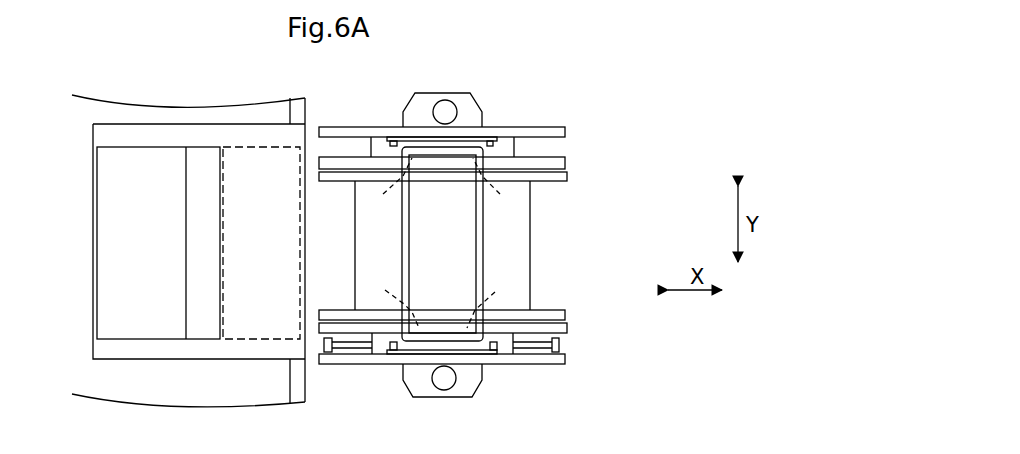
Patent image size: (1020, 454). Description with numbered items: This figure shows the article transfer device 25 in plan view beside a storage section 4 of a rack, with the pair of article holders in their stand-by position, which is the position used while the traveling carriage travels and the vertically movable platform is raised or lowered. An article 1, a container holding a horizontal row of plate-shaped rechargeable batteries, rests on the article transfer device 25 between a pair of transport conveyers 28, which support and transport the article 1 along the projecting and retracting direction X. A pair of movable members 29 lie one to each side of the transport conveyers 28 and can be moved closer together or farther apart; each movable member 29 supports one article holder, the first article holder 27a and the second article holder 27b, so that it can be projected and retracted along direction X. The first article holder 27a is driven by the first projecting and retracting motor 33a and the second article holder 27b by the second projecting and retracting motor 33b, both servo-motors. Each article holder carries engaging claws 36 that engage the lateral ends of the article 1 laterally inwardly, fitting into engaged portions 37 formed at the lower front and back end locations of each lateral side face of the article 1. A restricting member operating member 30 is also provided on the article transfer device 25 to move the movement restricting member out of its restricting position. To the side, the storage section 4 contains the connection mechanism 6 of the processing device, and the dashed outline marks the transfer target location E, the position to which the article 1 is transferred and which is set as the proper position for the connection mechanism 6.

The article 1 is at (470, 242).
The storage section 4 is at (213, 137).
The connection mechanism 6 is at (133, 265).
The article transfer device 25 is at (590, 378).
The first article holder 27a is at (394, 141).
The second article holder 27b is at (402, 351).
The transport conveyer 28 is at (568, 173).
The movable member 29 is at (568, 132).
The restricting member operating member 30 is at (355, 340).
The first projecting and retracting motor 33a is at (445, 112).
The second projecting and retracting motor 33b is at (447, 381).
The engaging claw 36 is at (388, 144).
The engaged portion 37 is at (444, 243).
The transfer target location E is at (250, 147).